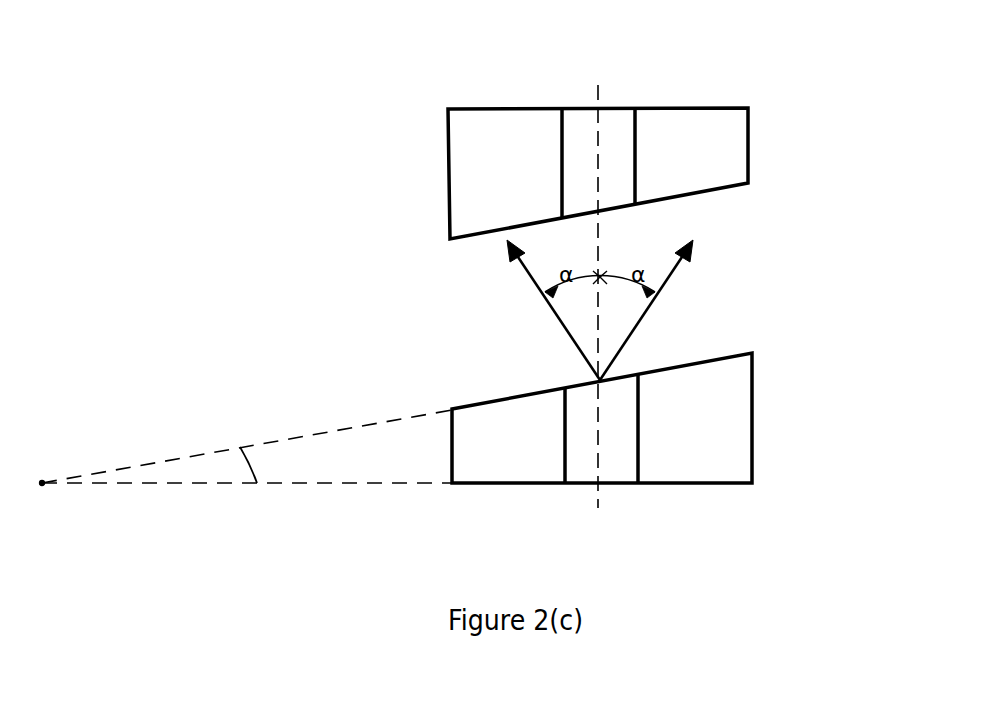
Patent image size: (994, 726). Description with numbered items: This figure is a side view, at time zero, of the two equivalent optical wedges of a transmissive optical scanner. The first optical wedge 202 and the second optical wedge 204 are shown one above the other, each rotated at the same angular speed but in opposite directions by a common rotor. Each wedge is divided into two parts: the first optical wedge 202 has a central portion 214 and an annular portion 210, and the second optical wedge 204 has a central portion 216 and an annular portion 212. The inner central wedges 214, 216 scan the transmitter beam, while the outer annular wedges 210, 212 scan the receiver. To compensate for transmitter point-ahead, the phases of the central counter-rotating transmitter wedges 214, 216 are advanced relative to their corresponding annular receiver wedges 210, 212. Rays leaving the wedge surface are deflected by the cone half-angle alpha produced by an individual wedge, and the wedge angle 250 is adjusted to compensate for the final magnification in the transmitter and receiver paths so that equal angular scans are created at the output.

The first optical wedge 202 is at (669, 130).
The second optical wedge 204 is at (672, 458).
The annular portion of first optical wedge 210 is at (665, 135).
The annular portion of second optical wedge 212 is at (663, 481).
The central portion of first optical wedge 214 is at (620, 127).
The central portion of second optical wedge 216 is at (612, 465).
The wedge angle 250 is at (258, 465).